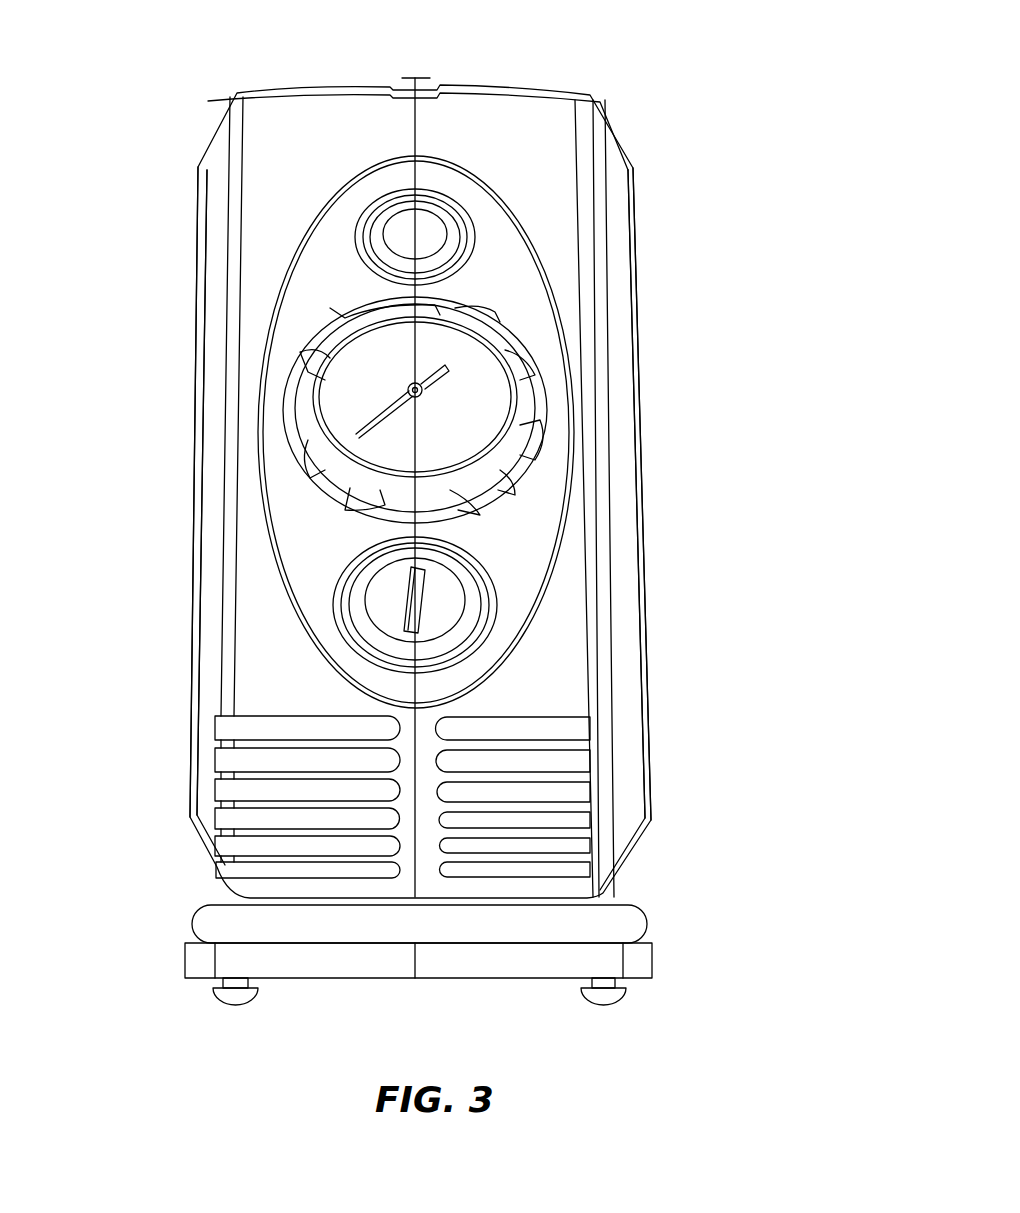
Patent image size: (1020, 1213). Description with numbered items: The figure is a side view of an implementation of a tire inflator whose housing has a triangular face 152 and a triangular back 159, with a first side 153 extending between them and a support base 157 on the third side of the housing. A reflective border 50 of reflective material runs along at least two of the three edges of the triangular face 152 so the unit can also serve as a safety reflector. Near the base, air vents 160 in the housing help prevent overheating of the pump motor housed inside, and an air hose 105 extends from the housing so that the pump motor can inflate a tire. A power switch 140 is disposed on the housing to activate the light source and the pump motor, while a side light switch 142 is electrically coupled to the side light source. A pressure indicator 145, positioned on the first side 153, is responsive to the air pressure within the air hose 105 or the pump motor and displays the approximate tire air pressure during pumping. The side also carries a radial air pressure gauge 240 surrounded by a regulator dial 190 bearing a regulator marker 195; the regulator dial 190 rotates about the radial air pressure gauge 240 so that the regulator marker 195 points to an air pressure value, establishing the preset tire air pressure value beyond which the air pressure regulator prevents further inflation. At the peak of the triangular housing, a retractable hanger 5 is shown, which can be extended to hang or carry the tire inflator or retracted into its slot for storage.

The retractable hanger 5 is at (413, 78).
The reflective border 50 is at (623, 487).
The air hose 105 is at (630, 925).
The power switch 140 is at (420, 223).
The side light switch 142 is at (385, 600).
The pressure indicator 145 is at (470, 397).
The triangular face 152 is at (640, 385).
The first side 153 is at (558, 228).
The support base 157 is at (520, 963).
The triangular back 159 is at (197, 202).
The air vents 160 is at (567, 793).
The regulator dial 190 is at (305, 410).
The regulator marker 195 is at (358, 368).
The radial air pressure gauge 240 is at (448, 357).